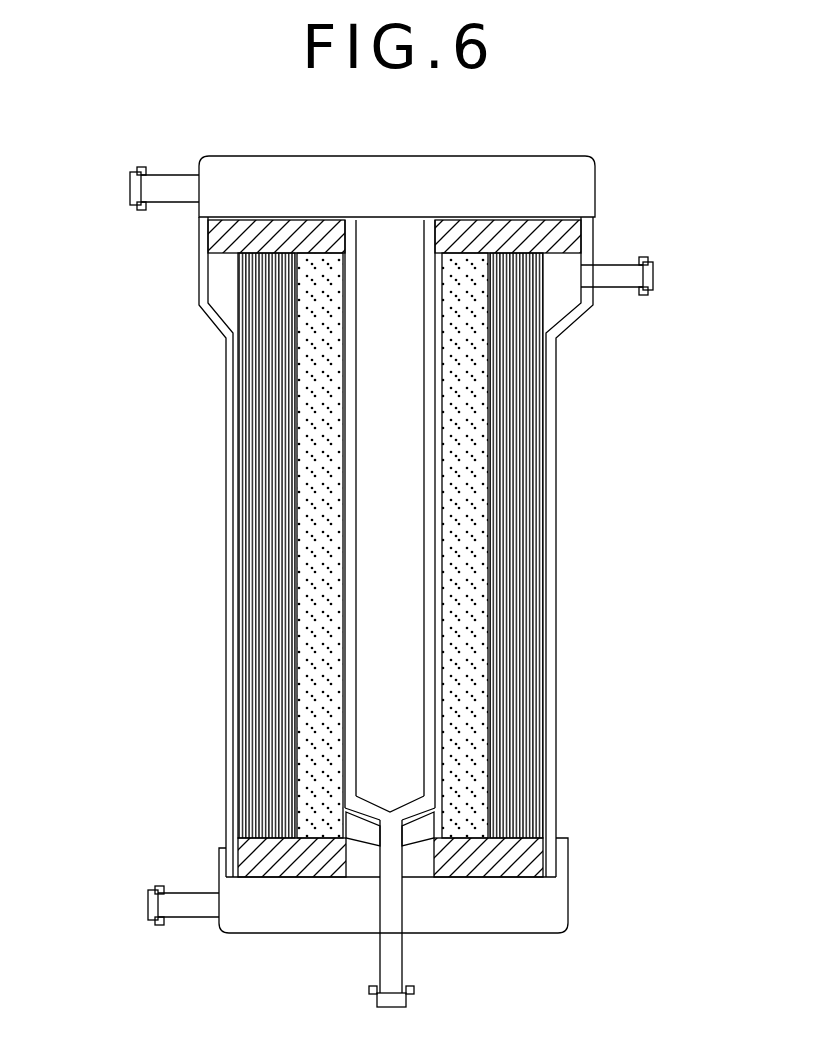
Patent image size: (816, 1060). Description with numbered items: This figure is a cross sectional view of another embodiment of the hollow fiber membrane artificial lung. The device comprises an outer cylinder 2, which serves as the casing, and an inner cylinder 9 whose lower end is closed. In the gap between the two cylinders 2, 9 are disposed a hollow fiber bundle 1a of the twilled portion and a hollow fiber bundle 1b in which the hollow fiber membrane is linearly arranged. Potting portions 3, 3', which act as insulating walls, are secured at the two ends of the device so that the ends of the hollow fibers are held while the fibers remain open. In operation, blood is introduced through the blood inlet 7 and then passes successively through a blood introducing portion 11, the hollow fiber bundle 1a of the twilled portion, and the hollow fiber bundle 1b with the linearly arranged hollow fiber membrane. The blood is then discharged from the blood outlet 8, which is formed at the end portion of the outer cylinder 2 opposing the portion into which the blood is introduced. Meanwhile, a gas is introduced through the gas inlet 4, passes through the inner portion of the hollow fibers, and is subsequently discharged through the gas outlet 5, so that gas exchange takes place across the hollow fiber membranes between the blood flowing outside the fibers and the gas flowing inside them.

The hollow fiber bundle of the twilled portion 1a is at (478, 532).
The hollow fiber bundle with linearly arranged hollow fiber membrane 1b is at (523, 605).
The outer cylinder 2 is at (558, 433).
The potting portion 3 is at (354, 237).
The potting portion 3' is at (352, 846).
The gas inlet 4 is at (130, 188).
The gas outlet 5 is at (150, 906).
The blood inlet 7 is at (412, 994).
The blood outlet 8 is at (653, 277).
The inner cylinder 9 is at (437, 688).
The blood introducing portion 11 is at (437, 805).